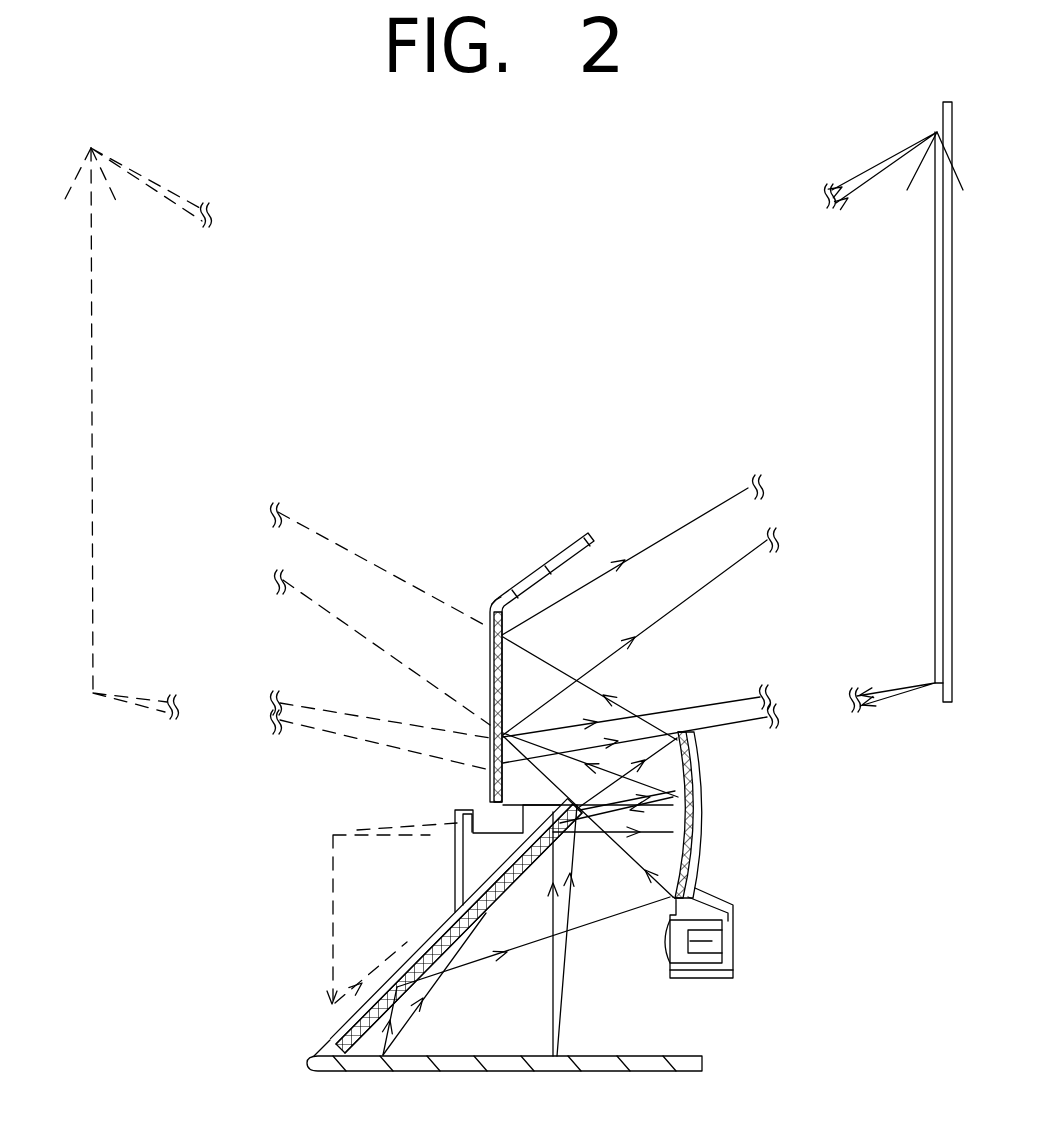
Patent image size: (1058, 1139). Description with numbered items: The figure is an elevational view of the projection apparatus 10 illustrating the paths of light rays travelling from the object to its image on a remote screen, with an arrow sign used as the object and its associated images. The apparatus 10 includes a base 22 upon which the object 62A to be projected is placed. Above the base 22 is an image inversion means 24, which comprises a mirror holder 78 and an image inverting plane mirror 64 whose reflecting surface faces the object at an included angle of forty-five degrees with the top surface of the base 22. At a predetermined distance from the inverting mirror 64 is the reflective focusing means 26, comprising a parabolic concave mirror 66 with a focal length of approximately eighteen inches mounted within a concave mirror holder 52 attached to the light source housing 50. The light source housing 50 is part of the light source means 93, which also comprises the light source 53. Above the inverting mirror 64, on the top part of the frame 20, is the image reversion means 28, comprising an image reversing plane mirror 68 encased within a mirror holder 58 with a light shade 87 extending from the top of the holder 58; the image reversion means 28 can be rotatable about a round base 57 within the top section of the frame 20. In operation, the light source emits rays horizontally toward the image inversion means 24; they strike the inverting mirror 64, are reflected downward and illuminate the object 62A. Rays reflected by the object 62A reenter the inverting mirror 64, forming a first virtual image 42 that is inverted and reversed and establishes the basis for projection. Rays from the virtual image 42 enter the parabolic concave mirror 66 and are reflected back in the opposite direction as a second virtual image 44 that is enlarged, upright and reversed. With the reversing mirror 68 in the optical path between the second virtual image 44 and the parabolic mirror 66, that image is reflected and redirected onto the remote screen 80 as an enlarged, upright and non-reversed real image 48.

The apparatus 10 is at (283, 852).
The frame 20 is at (327, 1036).
The base 22 is at (680, 1053).
The image inversion means 24 is at (457, 926).
The reflective focusing means 26 is at (720, 815).
The image reversion means 28 is at (506, 645).
The first virtual image 42 is at (333, 922).
The second virtual image 44 is at (93, 423).
The real image 48 is at (942, 350).
The light source housing 50 is at (735, 966).
The concave mirror holder 52 is at (698, 759).
The light source 53 is at (662, 945).
The round base 57 is at (468, 810).
The mirror holder 58 is at (489, 607).
The object 62A is at (463, 1056).
The image inverting plane mirror 64 is at (492, 901).
The parabolic concave mirror 66 is at (683, 880).
The image reversing plane mirror 68 is at (505, 652).
The mirror holder 78 is at (450, 913).
The remote screen 80 is at (941, 706).
The light shade 87 is at (559, 555).
The light source means 93 is at (746, 937).